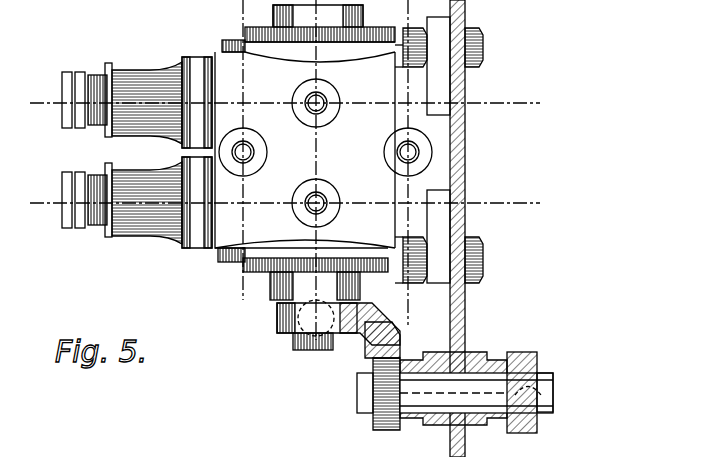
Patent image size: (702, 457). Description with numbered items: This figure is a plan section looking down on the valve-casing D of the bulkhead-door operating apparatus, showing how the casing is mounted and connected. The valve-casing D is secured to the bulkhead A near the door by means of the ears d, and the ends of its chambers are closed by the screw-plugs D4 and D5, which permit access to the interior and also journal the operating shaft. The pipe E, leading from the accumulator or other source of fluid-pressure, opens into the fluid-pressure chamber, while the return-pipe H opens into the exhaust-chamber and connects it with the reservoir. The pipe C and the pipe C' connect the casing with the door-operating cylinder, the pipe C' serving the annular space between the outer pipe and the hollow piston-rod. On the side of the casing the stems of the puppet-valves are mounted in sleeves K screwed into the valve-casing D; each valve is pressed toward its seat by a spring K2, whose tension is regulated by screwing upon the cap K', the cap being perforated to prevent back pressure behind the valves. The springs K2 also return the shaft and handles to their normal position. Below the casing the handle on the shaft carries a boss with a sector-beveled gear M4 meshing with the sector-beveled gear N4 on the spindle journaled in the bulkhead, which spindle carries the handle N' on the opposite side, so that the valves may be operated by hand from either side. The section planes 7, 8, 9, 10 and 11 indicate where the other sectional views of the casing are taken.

The section plane 7 7 is at (276, 202).
The section plane 8 8 is at (276, 104).
The section plane 9 9 is at (320, 178).
The section plane 10 10 is at (240, 163).
The section plane 11 11 is at (416, 162).
The bulkhead A is at (466, 306).
The ears d is at (467, 12).
The valve-casing D is at (305, 149).
The screw-plug D4 is at (278, 303).
The screw-plug D5 is at (334, 14).
The pipe E is at (331, 99).
The pipe C is at (245, 142).
The pipe C' is at (400, 142).
The return-pipe H is at (308, 196).
The sleeves K is at (162, 153).
The cap K' is at (53, 150).
The spring K2 is at (88, 245).
The sector-beveled gear M4 is at (362, 318).
The sector-beveled gear N4 is at (398, 342).
The handle N' is at (495, 399).